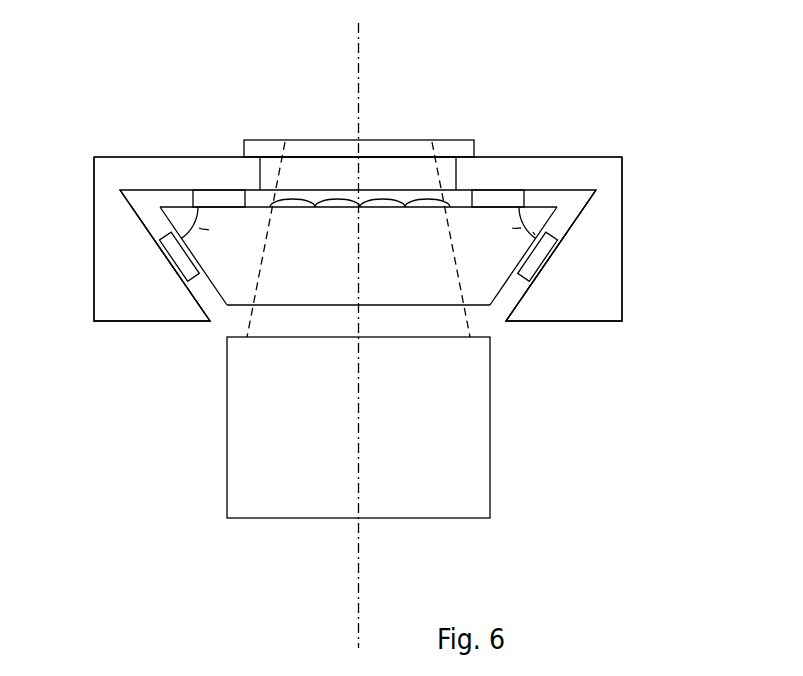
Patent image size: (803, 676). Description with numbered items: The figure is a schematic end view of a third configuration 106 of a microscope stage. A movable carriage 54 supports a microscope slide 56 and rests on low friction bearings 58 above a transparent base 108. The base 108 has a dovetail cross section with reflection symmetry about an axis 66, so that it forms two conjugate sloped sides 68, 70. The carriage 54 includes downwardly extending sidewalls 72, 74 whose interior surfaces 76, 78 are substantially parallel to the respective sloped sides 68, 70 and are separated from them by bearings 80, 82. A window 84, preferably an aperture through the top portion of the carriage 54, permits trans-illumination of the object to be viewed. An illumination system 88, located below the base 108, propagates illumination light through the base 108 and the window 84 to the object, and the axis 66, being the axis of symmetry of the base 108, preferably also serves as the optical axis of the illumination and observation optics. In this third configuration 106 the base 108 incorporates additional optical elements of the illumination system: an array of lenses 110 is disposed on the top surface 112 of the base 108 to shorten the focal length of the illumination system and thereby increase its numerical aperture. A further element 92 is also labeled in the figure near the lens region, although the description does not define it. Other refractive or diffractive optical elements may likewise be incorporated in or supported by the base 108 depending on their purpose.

The movable carriage 54 is at (170, 165).
The microscope slide 56 is at (453, 140).
The low friction bearings 58 is at (217, 198).
The window 84 is at (328, 170).
The array of lenses 110 is at (388, 202).
The light beam 92 is at (457, 232).
The top surface 112 is at (532, 235).
The sloped side 70 is at (163, 221).
The sloped side 68 is at (550, 220).
The interior surface 78 is at (148, 229).
The interior surface 76 is at (570, 228).
The bearing 82 is at (185, 265).
The bearing 80 is at (527, 282).
The sidewall 74 is at (118, 297).
The sidewall 72 is at (610, 275).
The base 108 is at (285, 293).
The illumination system 88 is at (453, 490).
The axis 66 is at (358, 572).
The third configuration 106 is at (181, 457).